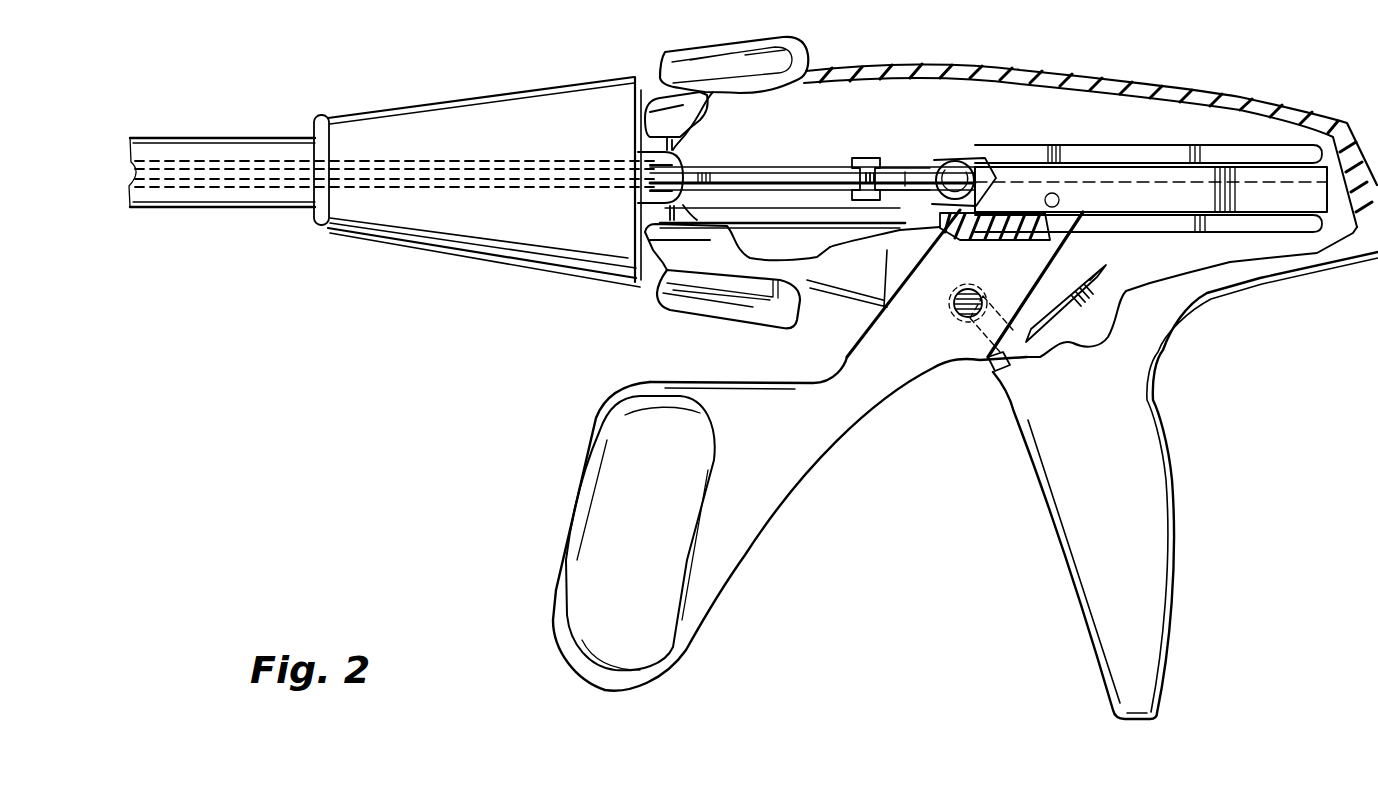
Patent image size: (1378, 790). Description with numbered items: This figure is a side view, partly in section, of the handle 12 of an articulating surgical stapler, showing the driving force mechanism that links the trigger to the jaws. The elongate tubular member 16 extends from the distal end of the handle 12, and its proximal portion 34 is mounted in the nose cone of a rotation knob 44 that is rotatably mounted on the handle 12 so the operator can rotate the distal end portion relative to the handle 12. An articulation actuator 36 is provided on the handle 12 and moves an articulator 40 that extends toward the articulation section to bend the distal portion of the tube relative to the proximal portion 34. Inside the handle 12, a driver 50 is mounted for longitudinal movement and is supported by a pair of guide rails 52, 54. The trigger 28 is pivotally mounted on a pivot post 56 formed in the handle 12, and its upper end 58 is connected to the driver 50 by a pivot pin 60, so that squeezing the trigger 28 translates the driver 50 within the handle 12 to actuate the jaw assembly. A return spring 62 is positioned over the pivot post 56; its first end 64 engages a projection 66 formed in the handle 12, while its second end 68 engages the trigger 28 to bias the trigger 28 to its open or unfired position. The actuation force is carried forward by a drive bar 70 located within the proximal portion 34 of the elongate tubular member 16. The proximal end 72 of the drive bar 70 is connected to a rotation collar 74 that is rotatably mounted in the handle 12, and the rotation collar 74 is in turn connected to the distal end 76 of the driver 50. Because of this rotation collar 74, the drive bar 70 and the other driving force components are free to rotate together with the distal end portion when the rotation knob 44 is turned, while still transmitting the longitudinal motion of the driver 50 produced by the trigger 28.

The handle 12 is at (938, 66).
The elongate tubular member 16 is at (223, 126).
The trigger 28 is at (572, 505).
The proximal portion 34 is at (240, 209).
The articulation actuator 36 is at (951, 176).
The articulator 40 is at (760, 178).
The rotation knob 44 is at (396, 108).
The driver 50 is at (1108, 193).
The guide rail 52 is at (1308, 156).
The guide rail 54 is at (1302, 224).
The pivot post 56 is at (950, 313).
The upper end 58 is at (1085, 214).
The pivot pin 60 is at (1050, 196).
The return spring 62 is at (1030, 362).
The first end 64 is at (1085, 345).
The projection 66 is at (1062, 308).
The second end 68 is at (988, 371).
The drive bar 70 is at (722, 166).
The proximal end 72 is at (818, 162).
The rotation collar 74 is at (860, 157).
The distal end 76 is at (893, 166).